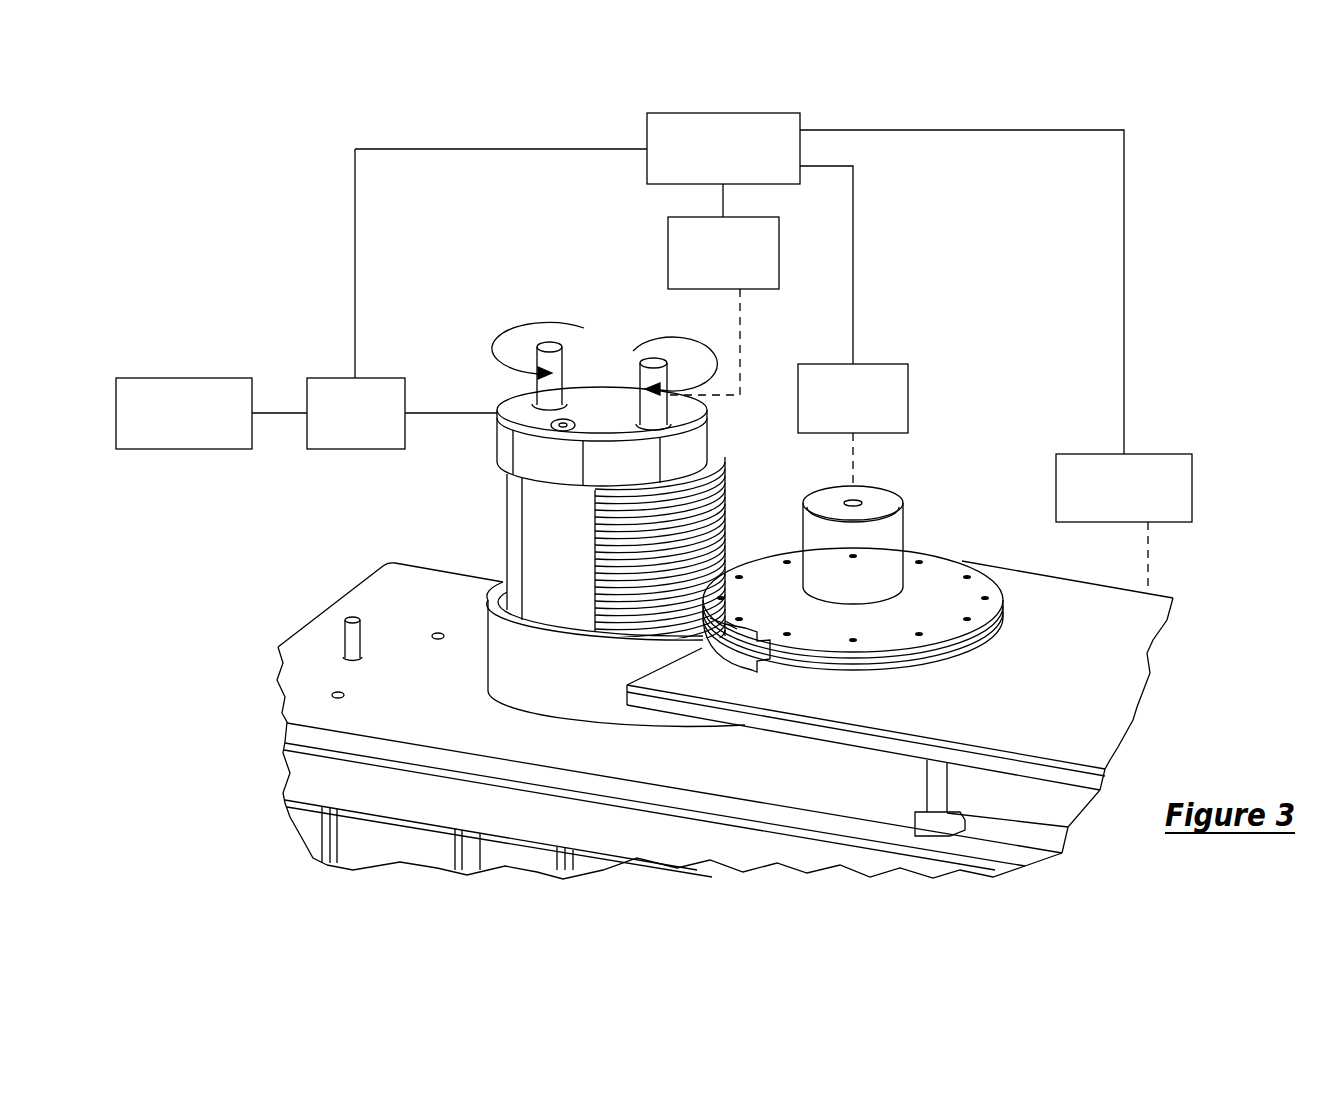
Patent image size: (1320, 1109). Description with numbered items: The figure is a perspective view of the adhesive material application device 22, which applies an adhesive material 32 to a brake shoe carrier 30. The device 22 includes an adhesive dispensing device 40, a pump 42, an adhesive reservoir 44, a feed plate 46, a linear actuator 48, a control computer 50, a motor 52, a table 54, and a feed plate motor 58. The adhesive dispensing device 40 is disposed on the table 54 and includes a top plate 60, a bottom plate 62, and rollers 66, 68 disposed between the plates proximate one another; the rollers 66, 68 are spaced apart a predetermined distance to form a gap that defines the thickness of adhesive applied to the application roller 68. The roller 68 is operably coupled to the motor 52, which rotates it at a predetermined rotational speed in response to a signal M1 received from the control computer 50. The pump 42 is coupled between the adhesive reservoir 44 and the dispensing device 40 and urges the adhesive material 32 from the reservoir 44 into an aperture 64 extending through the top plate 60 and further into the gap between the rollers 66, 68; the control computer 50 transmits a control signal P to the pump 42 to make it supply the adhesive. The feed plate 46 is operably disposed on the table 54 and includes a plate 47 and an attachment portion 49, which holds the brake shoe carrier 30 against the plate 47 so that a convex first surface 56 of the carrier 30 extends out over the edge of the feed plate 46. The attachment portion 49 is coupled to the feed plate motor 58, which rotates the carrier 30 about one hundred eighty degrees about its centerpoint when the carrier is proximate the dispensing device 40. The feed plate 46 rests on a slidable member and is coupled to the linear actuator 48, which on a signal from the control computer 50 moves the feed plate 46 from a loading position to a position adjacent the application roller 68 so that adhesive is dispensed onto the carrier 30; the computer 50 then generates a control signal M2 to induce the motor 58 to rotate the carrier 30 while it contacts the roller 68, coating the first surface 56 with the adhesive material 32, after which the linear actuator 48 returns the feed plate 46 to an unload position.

The adhesive material application device 22 is at (1172, 134).
The brake shoe carrier 30 is at (757, 670).
The adhesive material 32 is at (700, 520).
The adhesive dispensing device 40 is at (605, 489).
The pump 42 is at (334, 378).
The adhesive reservoir 44 is at (181, 378).
The feed plate 46 is at (1012, 570).
The plate 47 is at (1069, 603).
The linear actuator 48 is at (1192, 487).
The attachment portion 49 is at (885, 504).
The control computer 50 is at (723, 113).
The motor 52 is at (668, 250).
The table 54 is at (318, 713).
The first surface 56 is at (722, 630).
The feed plate motor 58 is at (908, 398).
The top plate 60 is at (695, 445).
The bottom plate 62 is at (500, 652).
The aperture 64 is at (568, 419).
The roller 66 is at (515, 508).
The application roller 68 is at (715, 470).
The control signal P is at (357, 262).
The signal M1 is at (725, 197).
The control signal M2 is at (855, 262).